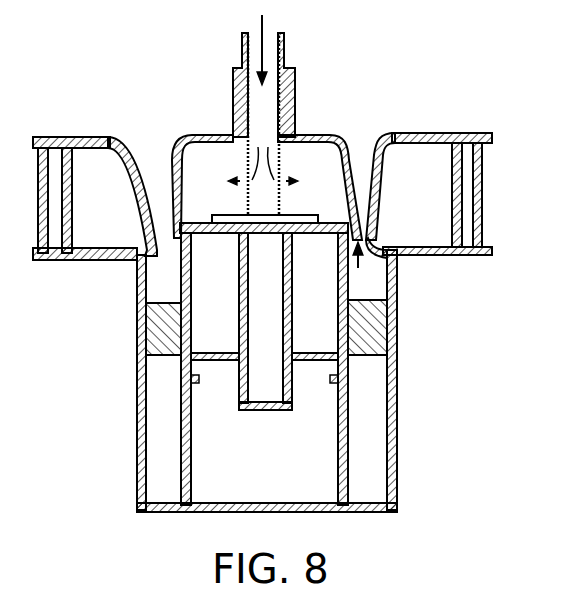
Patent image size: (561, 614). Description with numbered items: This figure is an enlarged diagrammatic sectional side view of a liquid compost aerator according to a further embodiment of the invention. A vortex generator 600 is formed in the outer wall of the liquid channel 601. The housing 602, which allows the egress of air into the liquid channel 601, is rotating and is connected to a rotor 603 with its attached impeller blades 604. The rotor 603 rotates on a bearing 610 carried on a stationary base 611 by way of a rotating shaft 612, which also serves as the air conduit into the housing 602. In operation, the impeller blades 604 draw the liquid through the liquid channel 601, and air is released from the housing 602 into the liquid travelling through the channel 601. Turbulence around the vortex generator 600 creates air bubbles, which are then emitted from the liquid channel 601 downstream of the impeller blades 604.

The rotating shaft 612 is at (284, 48).
The housing 602 is at (325, 138).
The liquid channel 601 is at (366, 186).
The rotor 603 is at (180, 278).
The vortex generator 600 is at (358, 270).
The impeller blades 604 is at (362, 358).
The bearing 610 is at (255, 384).
The stationary base 611 is at (350, 442).